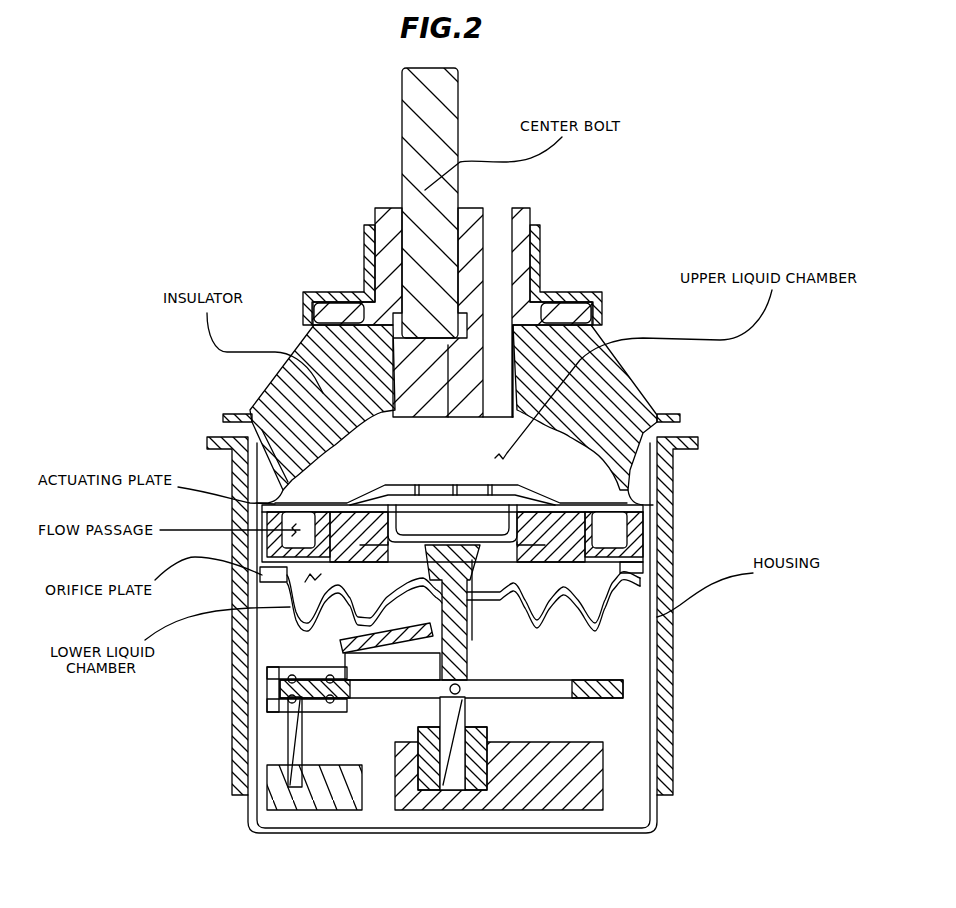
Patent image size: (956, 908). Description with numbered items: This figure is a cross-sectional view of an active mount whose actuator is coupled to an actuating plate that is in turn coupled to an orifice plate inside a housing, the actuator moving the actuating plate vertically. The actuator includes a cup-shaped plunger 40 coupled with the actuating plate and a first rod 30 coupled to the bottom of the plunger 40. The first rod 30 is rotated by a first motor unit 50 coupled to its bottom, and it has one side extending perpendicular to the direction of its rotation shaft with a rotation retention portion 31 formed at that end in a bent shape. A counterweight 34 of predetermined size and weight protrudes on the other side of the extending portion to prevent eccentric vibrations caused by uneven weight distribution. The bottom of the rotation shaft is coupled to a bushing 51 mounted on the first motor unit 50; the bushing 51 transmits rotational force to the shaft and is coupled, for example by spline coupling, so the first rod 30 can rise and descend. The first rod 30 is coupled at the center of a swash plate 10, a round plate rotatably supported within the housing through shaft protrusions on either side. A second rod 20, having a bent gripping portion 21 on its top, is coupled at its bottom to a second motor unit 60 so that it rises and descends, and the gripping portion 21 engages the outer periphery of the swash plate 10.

The swash plate 10 is at (620, 700).
The second rod 20 is at (297, 737).
The gripping portion 21 is at (275, 670).
The first rod 30 is at (450, 660).
The rotation retention portion 31 is at (330, 668).
The counterweight 34 is at (470, 640).
The plunger 40 is at (470, 562).
The first motor unit 50 is at (537, 792).
The bushing 51 is at (475, 792).
The second motor unit 60 is at (343, 792).